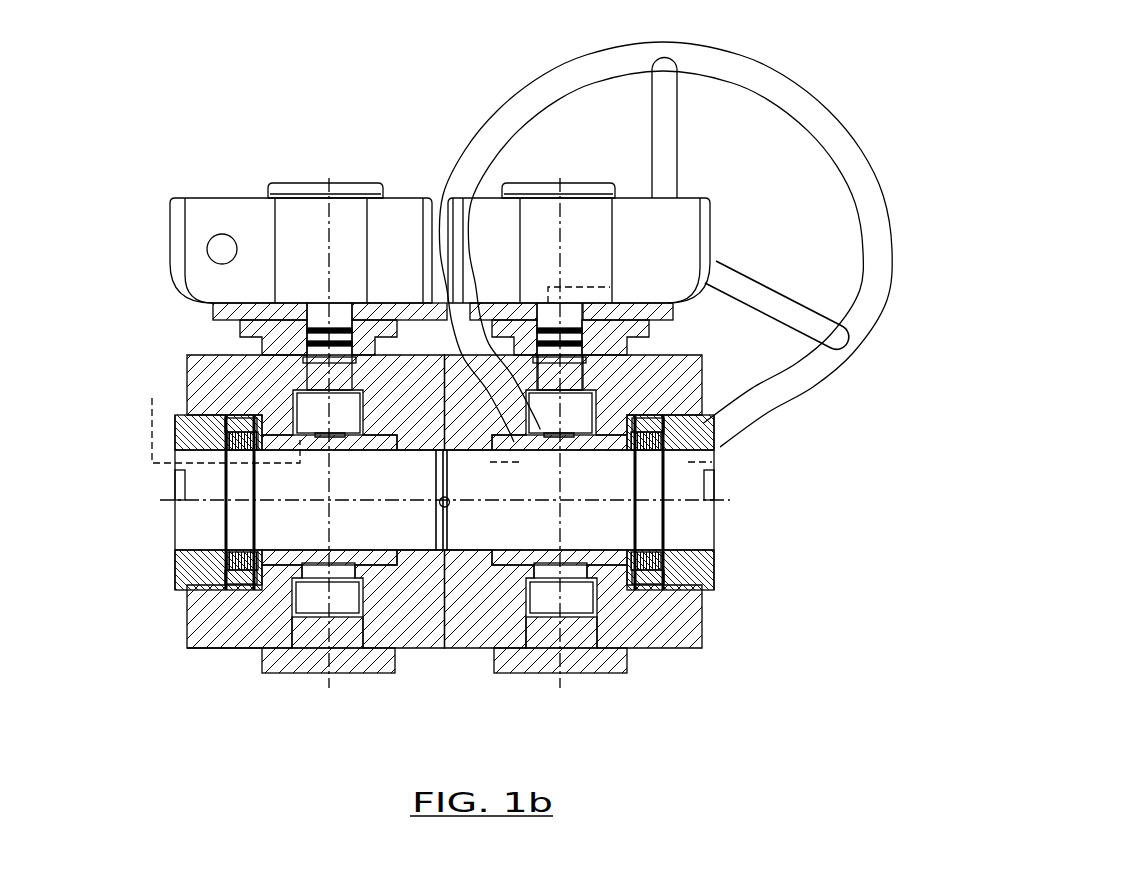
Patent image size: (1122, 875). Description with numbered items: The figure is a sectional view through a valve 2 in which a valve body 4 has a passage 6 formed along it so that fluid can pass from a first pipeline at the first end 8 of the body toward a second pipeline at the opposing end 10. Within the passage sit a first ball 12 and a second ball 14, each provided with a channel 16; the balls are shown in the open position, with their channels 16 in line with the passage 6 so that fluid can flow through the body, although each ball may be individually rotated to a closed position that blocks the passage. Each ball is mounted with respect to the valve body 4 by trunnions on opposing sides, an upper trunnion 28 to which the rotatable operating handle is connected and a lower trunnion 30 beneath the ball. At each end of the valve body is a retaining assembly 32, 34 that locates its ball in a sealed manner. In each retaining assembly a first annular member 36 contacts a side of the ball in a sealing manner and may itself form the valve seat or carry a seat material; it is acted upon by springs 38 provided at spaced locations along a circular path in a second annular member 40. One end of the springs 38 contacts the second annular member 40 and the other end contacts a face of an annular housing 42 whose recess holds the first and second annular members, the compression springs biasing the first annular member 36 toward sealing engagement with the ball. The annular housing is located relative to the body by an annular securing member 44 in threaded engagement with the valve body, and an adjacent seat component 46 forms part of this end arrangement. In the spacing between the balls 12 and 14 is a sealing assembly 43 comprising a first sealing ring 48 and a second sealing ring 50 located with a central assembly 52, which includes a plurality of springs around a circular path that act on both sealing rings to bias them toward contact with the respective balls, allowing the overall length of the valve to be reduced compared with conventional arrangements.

The valve 2 is at (690, 672).
The valve body 4 is at (722, 430).
The passage 6 is at (700, 466).
The first end 8 is at (230, 556).
The opposing end 10 is at (712, 562).
The first ball 12 is at (243, 592).
The second ball 14 is at (625, 595).
The channels 16 is at (365, 532).
The upper trunnions 28 is at (247, 403).
The lower trunnions 30 is at (300, 662).
The retaining assembly 32 is at (195, 600).
The retaining assembly 34 is at (705, 605).
The first annular member 36 is at (220, 430).
The springs 38 is at (237, 446).
The second annular member 40 is at (235, 490).
The annular housing 42 is at (232, 408).
The annular securing member 44 is at (210, 442).
The seat retainer 46 is at (230, 468).
The sealing assembly 43 is at (440, 440).
The first sealing ring 48 is at (318, 385).
The second sealing ring 50 is at (596, 395).
The central assembly 52 is at (512, 437).